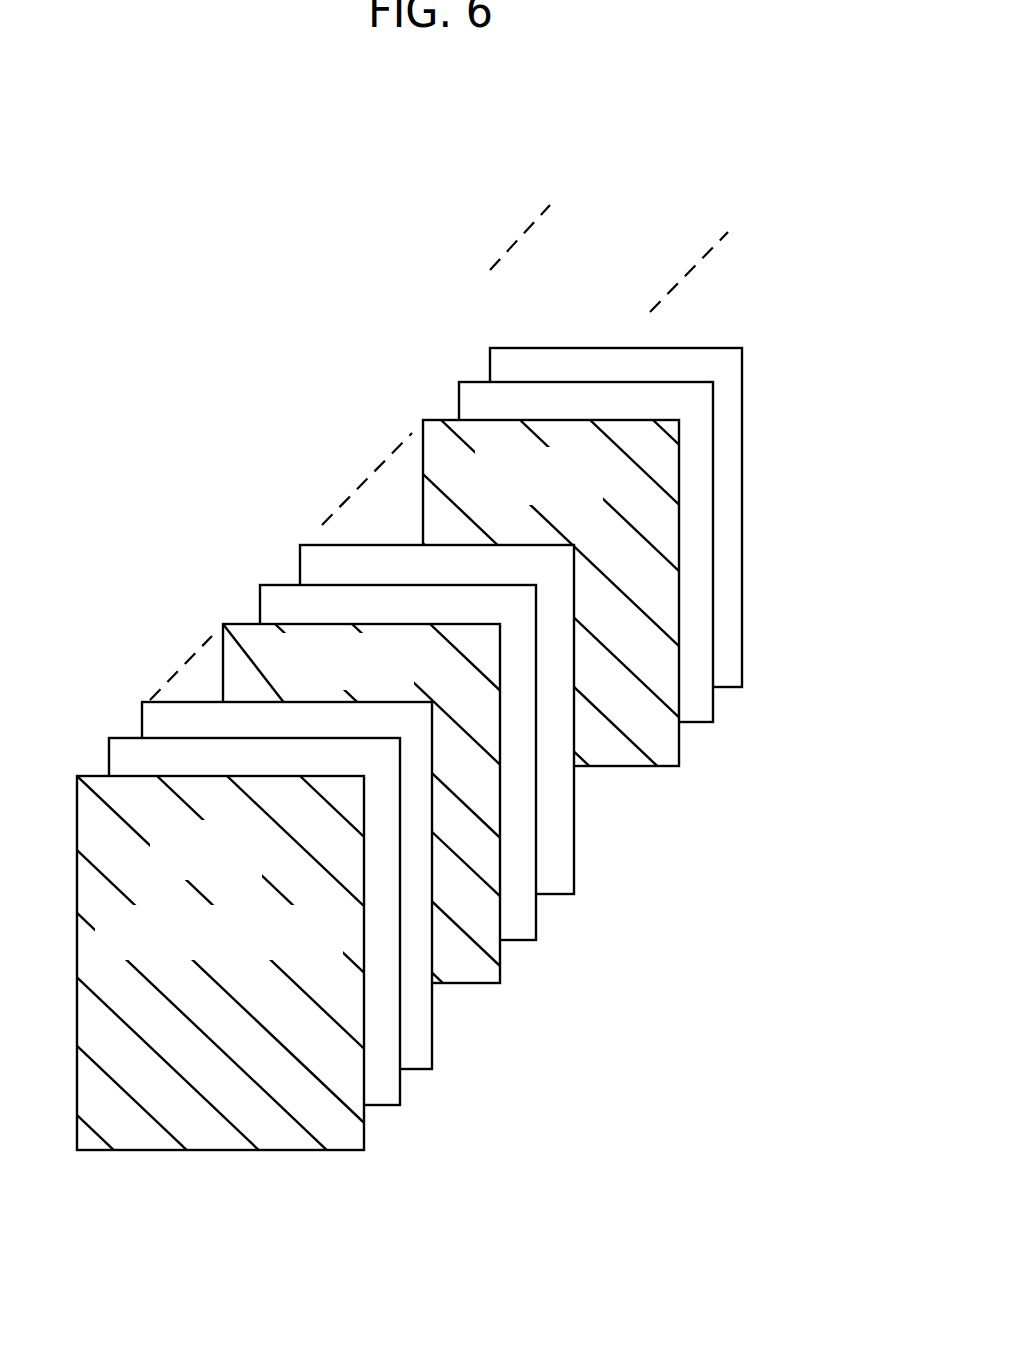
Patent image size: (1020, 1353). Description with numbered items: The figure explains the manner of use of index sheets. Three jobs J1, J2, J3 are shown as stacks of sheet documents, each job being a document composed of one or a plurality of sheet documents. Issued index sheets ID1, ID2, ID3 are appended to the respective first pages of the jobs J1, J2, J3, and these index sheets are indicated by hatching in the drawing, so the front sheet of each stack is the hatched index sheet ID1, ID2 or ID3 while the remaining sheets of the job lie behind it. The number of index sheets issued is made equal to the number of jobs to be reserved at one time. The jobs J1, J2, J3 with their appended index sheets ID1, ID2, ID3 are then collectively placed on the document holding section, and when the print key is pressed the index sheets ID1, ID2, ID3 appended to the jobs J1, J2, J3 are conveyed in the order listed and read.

The job J1 is at (350, 968).
The job J2 is at (447, 775).
The job J3 is at (622, 559).
The index sheet ID1 is at (360, 1136).
The index sheet ID2 is at (496, 971).
The index sheet ID3 is at (673, 753).